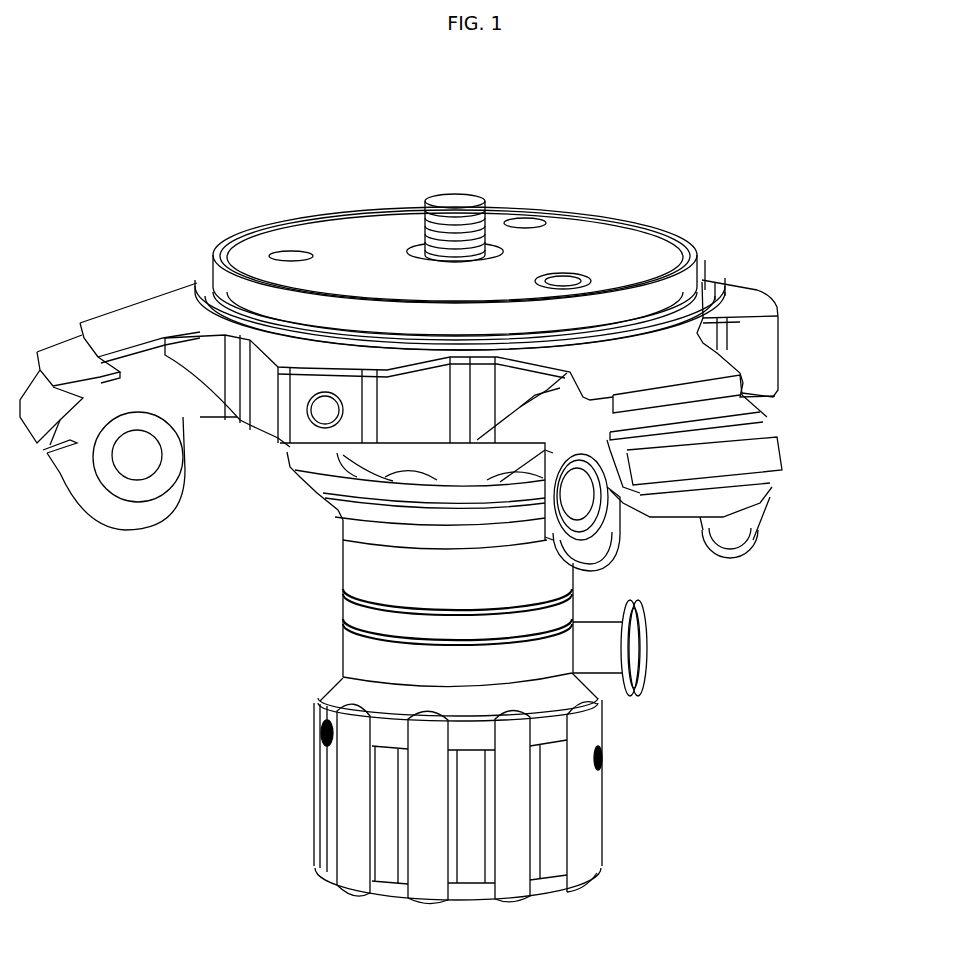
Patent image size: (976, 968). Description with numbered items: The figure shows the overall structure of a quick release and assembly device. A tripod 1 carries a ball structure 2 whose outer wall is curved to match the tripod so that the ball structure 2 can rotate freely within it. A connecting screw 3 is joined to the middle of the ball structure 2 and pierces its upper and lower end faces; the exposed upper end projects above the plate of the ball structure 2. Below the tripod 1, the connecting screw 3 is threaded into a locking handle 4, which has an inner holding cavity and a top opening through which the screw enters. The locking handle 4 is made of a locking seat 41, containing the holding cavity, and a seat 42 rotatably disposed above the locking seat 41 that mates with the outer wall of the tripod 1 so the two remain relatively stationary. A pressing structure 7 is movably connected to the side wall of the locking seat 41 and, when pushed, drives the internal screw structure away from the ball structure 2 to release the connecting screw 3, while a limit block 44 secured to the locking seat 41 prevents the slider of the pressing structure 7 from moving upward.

The tripod 1 is at (743, 303).
The ball structure 2 is at (697, 248).
The connecting screw 3 is at (467, 197).
The locking handle 4 is at (238, 665).
The locking seat 41 is at (353, 647).
The seat 42 is at (350, 553).
The limit block 44 is at (350, 610).
The pressing structure 7 is at (643, 647).